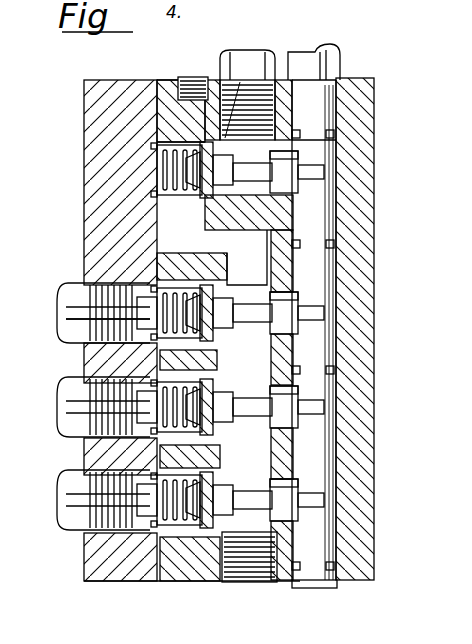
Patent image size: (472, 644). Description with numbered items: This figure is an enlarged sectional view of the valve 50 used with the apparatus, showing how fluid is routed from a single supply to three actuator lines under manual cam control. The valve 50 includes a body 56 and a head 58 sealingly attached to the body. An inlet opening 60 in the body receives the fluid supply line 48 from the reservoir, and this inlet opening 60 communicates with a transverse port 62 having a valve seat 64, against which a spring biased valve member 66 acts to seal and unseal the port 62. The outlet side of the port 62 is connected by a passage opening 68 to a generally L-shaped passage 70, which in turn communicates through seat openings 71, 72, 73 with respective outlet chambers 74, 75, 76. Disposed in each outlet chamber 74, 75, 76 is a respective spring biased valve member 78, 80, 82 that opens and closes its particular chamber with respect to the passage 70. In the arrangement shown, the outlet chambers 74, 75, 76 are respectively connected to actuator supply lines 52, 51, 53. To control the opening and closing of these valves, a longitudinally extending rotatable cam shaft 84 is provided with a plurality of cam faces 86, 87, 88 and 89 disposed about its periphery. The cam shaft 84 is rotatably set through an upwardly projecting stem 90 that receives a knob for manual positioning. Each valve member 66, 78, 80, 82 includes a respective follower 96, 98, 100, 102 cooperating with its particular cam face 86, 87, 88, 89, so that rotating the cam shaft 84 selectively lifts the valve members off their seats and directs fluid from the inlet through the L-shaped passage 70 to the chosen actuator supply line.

The fluid supply line 48 is at (230, 68).
The valve 50 is at (84, 207).
The actuator supply line 51 is at (62, 385).
The actuator supply line 52 is at (62, 287).
The actuator supply line 53 is at (60, 513).
The body 56 is at (365, 216).
The head 58 is at (88, 570).
The inlet opening 60 is at (262, 62).
The transverse port 62 is at (262, 190).
The valve seat 64 is at (175, 80).
The spring biased valve member 66 is at (178, 212).
The passage opening 68 is at (208, 212).
The L-shaped passage 70 is at (265, 266).
The seat opening 71 is at (245, 284).
The seat opening 72 is at (224, 393).
The seat opening 73 is at (228, 482).
The outlet chamber 74 is at (195, 340).
The outlet chamber 75 is at (215, 435).
The outlet chamber 76 is at (162, 565).
The spring biased valve member 78 is at (75, 317).
The spring biased valve member 80 is at (78, 451).
The spring biased valve member 82 is at (185, 560).
The cam shaft 84 is at (323, 370).
The cam face 86 is at (292, 170).
The cam face 87 is at (295, 318).
The cam face 88 is at (295, 407).
The cam face 89 is at (295, 504).
The stem 90 is at (320, 48).
The follower 96 is at (295, 158).
The follower 98 is at (295, 302).
The follower 100 is at (295, 397).
The follower 102 is at (295, 490).